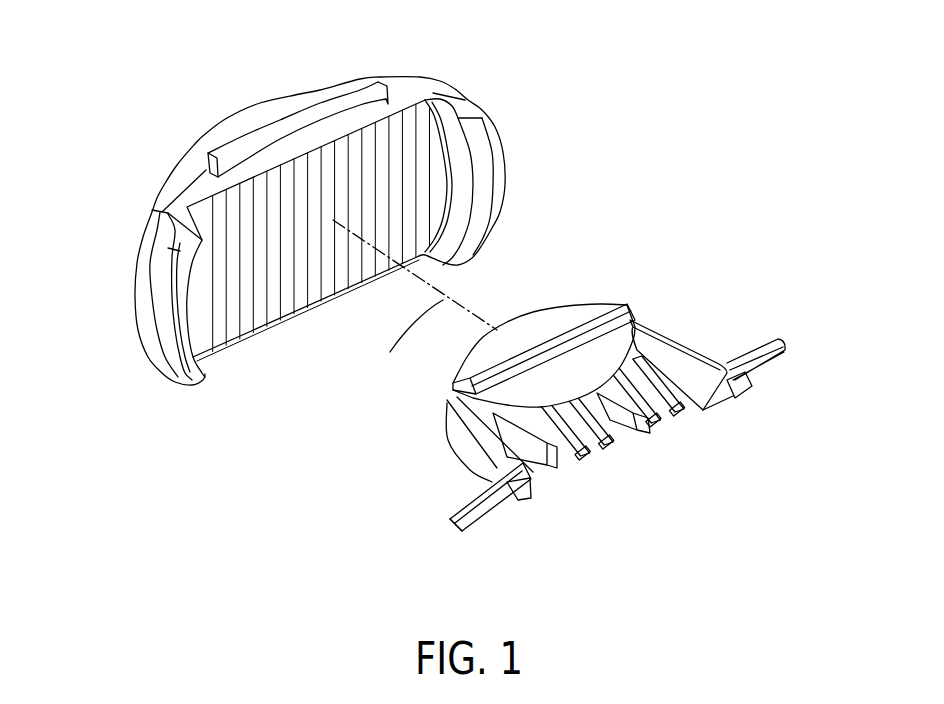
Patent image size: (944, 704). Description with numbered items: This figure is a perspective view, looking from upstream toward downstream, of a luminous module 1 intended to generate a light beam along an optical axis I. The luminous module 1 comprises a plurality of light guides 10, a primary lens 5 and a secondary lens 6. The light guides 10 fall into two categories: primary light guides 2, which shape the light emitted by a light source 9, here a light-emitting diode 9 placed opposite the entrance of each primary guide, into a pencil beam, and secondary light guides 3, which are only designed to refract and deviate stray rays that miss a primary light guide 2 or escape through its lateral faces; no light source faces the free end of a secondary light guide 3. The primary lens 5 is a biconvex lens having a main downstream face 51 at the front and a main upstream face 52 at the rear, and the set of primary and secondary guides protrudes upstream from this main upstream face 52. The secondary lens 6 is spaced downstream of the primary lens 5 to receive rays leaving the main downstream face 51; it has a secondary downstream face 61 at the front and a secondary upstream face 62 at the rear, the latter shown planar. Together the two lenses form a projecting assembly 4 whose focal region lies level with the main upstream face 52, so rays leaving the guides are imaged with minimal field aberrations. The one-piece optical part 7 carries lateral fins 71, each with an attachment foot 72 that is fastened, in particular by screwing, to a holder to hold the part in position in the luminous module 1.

The luminous module 1 is at (695, 94).
The primary light guides 2 is at (677, 410).
The secondary light guides 3 is at (537, 453).
The projecting assembly 4 is at (177, 481).
The primary lens 5 is at (455, 378).
The secondary lens 6 is at (180, 383).
The one-piece optical part 7 is at (618, 303).
The light source 9 is at (667, 417).
The light guides 10 is at (769, 468).
The main downstream face 51 is at (563, 306).
The main upstream face 52 is at (500, 420).
The secondary downstream face 61 is at (232, 118).
The secondary upstream face 62 is at (417, 177).
The lateral fins 71 is at (664, 361).
The attachment foot 72 is at (777, 336).